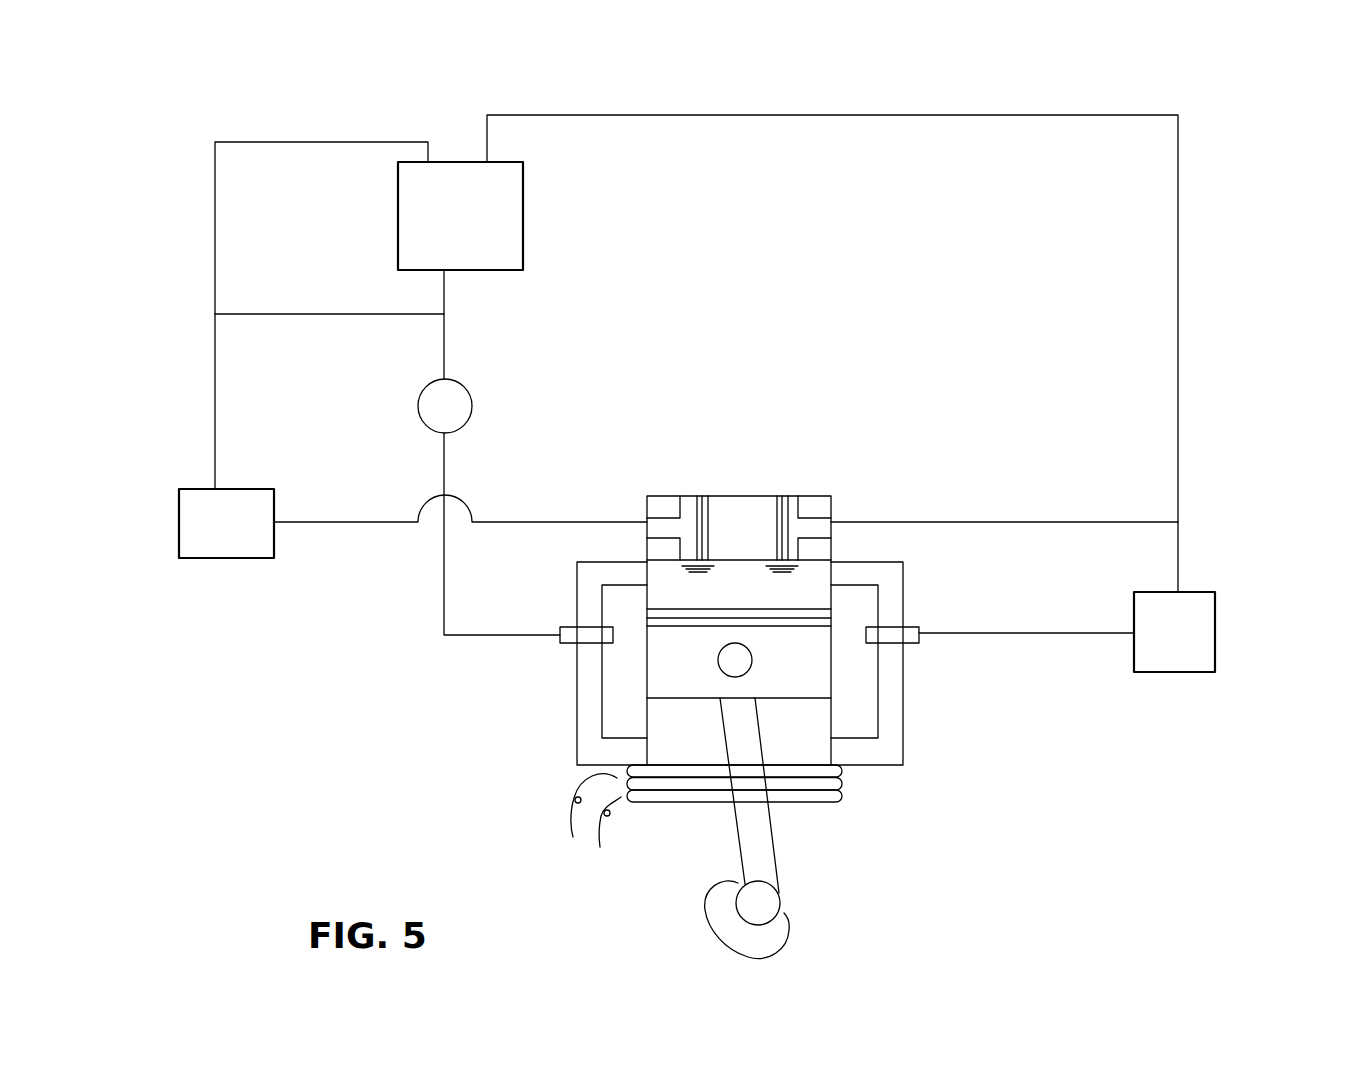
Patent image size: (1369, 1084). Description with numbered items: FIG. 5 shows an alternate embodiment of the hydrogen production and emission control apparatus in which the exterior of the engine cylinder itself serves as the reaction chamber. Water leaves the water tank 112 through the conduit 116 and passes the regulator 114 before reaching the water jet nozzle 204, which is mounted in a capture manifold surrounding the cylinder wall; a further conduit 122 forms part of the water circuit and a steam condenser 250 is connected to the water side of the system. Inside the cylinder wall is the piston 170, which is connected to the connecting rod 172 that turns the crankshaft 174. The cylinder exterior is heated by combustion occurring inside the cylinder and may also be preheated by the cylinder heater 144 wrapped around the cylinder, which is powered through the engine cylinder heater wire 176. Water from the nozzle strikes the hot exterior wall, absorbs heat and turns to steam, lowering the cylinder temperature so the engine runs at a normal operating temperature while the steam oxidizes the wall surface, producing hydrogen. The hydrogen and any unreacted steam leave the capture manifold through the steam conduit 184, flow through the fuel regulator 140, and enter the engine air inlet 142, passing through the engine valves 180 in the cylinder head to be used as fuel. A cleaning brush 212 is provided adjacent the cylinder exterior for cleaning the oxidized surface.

The water tank 112 is at (523, 222).
The regulator 114 is at (418, 406).
The conduit 116 is at (862, 115).
The conduit 122 is at (215, 285).
The fuel regulator for hydrogen and steam mixture 140 is at (1215, 637).
The engine air inlet 142 is at (832, 505).
The cylinder heater 144 is at (818, 800).
The piston 170 is at (815, 678).
The connecting rod 172 is at (776, 866).
The crankshaft 174 is at (790, 940).
The engine cylinder heater wire 176 is at (572, 826).
The engine valves 180 is at (699, 496).
The steam conduit from reaction chamber 184 is at (1035, 522).
The water jet nozzle 204 is at (560, 627).
The cleaning brush 212 is at (912, 645).
The steam condenser 250 is at (179, 522).